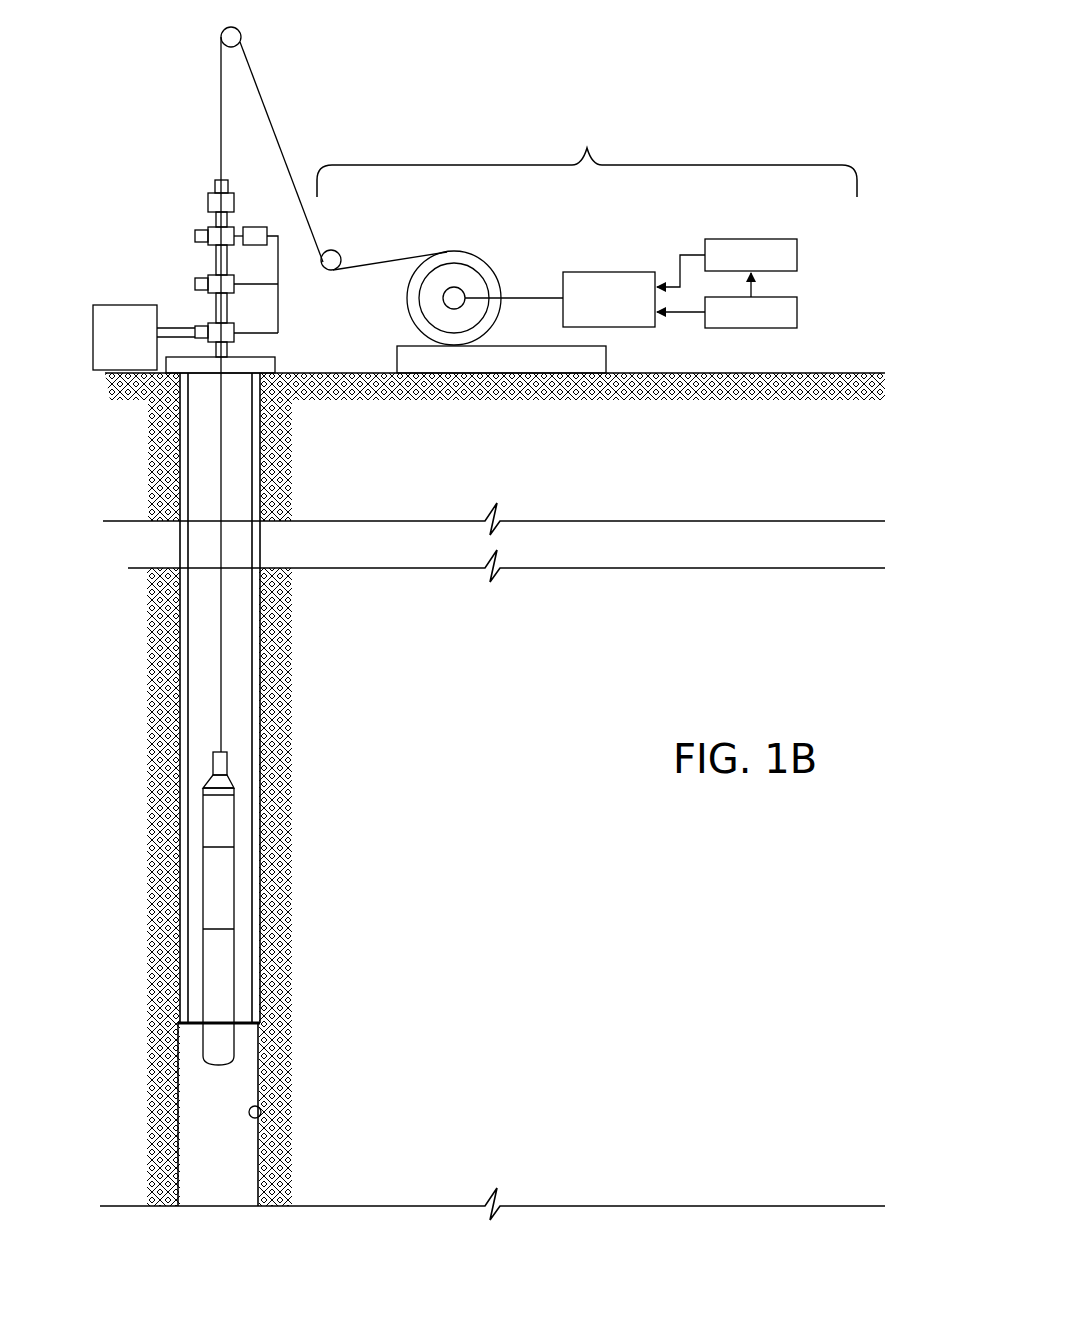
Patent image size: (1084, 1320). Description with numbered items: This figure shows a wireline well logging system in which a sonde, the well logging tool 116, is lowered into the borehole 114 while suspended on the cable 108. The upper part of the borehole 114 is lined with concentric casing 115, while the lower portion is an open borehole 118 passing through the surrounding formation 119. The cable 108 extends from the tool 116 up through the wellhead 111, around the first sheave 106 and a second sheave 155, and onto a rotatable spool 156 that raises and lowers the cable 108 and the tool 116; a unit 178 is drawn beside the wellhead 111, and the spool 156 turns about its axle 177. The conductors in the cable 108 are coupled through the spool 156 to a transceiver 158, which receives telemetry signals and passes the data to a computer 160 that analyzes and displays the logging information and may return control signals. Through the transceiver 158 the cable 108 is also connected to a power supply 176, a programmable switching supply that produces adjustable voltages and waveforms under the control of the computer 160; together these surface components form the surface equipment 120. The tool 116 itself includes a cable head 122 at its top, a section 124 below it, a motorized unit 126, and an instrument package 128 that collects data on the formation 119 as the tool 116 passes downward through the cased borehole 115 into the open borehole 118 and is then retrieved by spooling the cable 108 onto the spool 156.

The first sheave 106 is at (224, 28).
The wellhead 111 is at (190, 175).
The pump 178 is at (144, 337).
The second sheave 155 is at (331, 250).
The rotatable spool 156 is at (460, 252).
The drum axle 177 is at (442, 292).
The transceiver 158 is at (607, 272).
The power supply 176 is at (797, 253).
The computer 160 is at (797, 310).
The surface system 120 is at (587, 155).
The casing 115 is at (255, 619).
The cable 108 is at (219, 687).
The cable head 122 is at (225, 762).
The tool section 124 is at (227, 812).
The motorized unit 126 is at (223, 900).
The formation 119 is at (280, 942).
The well logging tool 116 is at (234, 993).
The instrument package 128 is at (223, 1043).
The open borehole 118 is at (261, 1108).
The borehole 114 is at (227, 1163).